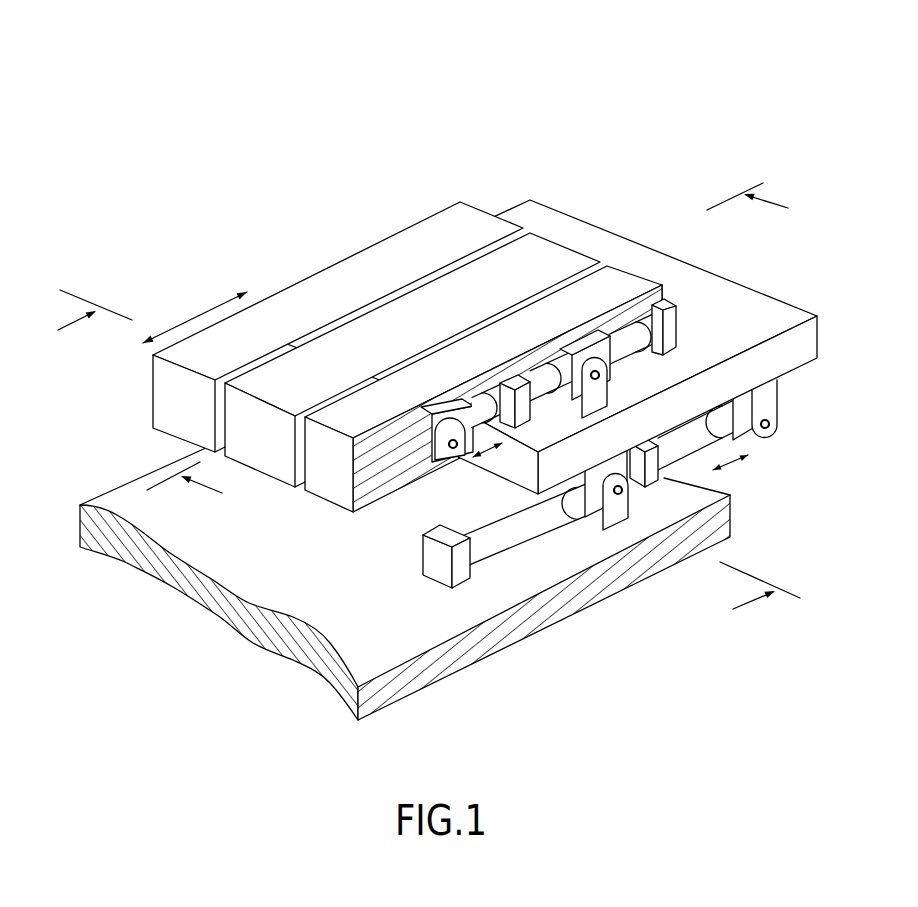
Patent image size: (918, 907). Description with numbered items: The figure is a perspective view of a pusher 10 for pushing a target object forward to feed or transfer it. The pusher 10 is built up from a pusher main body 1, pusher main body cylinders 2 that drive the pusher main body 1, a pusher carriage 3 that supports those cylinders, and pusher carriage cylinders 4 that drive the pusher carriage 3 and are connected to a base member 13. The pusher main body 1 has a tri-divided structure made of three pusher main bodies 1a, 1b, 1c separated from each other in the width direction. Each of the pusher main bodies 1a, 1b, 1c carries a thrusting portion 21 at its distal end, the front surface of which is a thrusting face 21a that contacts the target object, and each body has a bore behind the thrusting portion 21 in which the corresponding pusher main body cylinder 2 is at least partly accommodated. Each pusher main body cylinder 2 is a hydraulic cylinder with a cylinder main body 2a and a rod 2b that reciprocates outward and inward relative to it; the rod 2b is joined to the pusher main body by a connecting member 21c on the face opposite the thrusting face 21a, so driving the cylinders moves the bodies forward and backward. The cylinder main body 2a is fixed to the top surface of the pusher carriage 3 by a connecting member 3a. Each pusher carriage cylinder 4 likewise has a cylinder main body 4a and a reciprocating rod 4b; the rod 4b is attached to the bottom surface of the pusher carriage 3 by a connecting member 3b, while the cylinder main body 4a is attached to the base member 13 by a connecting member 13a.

The pusher 10 is at (699, 90).
The pusher main body 1 is at (300, 228).
The pusher main body 1a is at (385, 260).
The pusher main body 1b is at (563, 253).
The pusher main body 1c is at (623, 290).
The pusher main body cylinder 2 is at (562, 398).
The cylinder main body 2a is at (547, 362).
The rod 2b is at (499, 408).
The pusher carriage 3 is at (765, 303).
The connecting member 3a is at (605, 398).
The connecting member 3b is at (771, 397).
The pusher carriage cylinder 4 is at (523, 518).
The cylinder main body 4a is at (500, 545).
The rod 4b is at (675, 450).
The base member 13 is at (380, 640).
The connecting member 13a is at (618, 505).
The thrusting portion 21 is at (400, 490).
The thrusting face 21a is at (332, 483).
The connecting member 21c is at (456, 458).